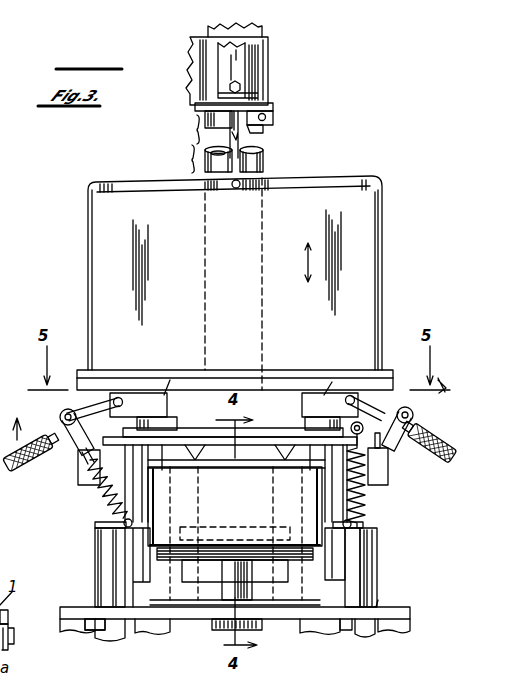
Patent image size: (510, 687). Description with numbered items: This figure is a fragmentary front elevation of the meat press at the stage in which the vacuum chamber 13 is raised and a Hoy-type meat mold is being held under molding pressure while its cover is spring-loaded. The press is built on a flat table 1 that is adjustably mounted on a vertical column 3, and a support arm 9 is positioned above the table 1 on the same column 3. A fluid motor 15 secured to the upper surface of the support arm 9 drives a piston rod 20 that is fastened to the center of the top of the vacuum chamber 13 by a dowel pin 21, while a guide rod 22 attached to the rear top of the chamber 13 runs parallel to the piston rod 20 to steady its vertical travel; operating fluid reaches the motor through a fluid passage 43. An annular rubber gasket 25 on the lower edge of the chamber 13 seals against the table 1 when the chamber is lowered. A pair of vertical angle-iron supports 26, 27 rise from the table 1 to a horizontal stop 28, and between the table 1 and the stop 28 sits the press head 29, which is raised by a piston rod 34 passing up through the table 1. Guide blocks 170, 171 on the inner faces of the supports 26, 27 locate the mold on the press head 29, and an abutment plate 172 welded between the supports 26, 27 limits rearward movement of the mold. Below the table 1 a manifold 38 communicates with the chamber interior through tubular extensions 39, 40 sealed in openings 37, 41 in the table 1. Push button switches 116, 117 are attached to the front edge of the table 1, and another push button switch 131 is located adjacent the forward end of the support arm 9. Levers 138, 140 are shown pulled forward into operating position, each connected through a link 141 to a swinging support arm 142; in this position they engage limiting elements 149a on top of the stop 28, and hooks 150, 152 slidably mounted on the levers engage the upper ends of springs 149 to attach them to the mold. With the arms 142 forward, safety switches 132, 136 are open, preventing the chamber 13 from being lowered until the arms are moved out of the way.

The table 1 is at (419, 614).
The vertical column 3 is at (266, 135).
The support arm 9 is at (268, 105).
The vacuum chamber 13 is at (78, 228).
The fluid motor 15 is at (245, 58).
The piston rod 20 is at (214, 160).
The dowel pin 21 is at (236, 189).
The guide rod 22 is at (230, 126).
The annular rubber gasket 25 is at (100, 385).
The angle-iron support 26 is at (125, 556).
The angle-iron support 27 is at (340, 558).
The stop 28 is at (270, 437).
The press head 29 is at (258, 581).
The piston rod 34 is at (255, 604).
The opening 37 is at (377, 607).
The manifold 38 is at (362, 573).
The tubular extension 39 is at (368, 530).
The tubular extension 40 is at (104, 524).
The opening 41 is at (95, 617).
The fluid passage 43 is at (230, 86).
The push button switch 116 is at (77, 628).
The push button switch 117 is at (388, 626).
The push button switch 131 is at (273, 116).
The safety switch 132 is at (78, 472).
The safety switch 136 is at (390, 468).
The lever 138 is at (48, 440).
The lever 140 is at (398, 413).
The link 141 is at (332, 392).
The swinging support arm 142 is at (234, 411).
The spring 149 is at (100, 494).
The limiting element 149a is at (165, 395).
The hook 150 is at (88, 460).
The hook 152 is at (386, 454).
The guide block 170 is at (142, 570).
The guide block 171 is at (328, 582).
The abutment plate 172 is at (214, 548).